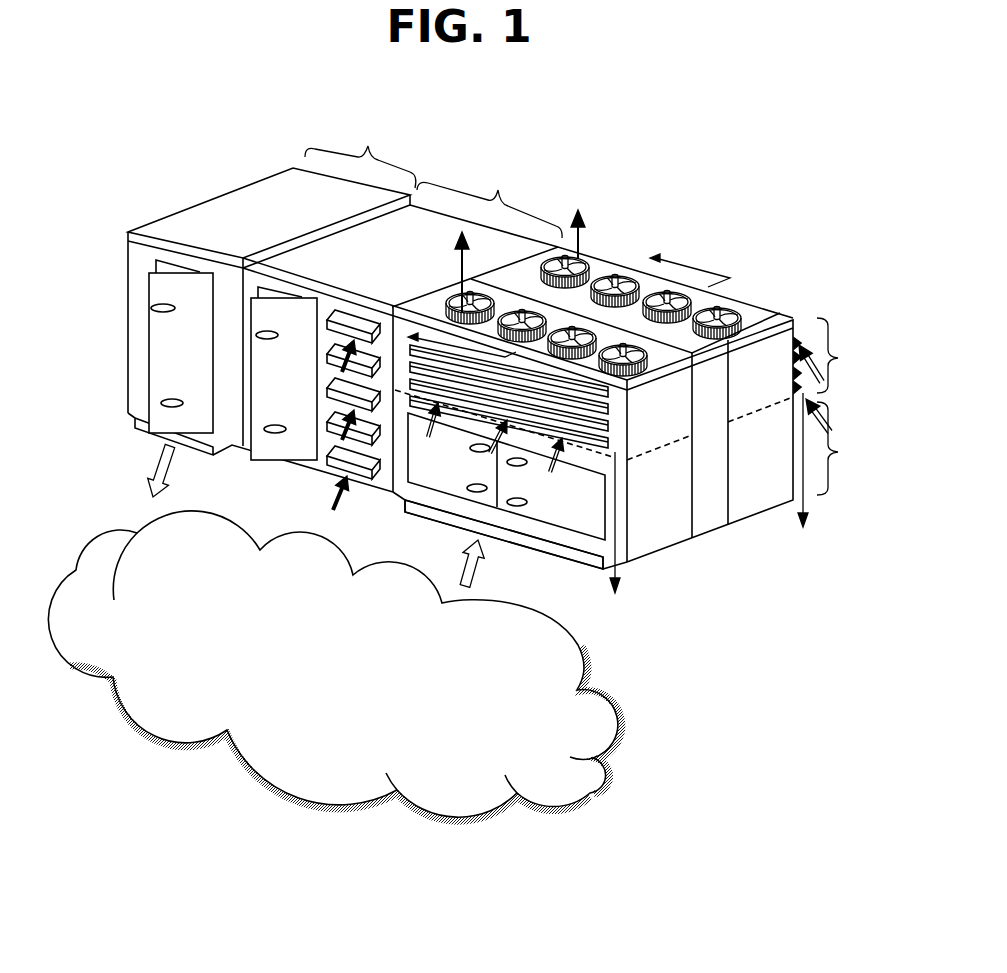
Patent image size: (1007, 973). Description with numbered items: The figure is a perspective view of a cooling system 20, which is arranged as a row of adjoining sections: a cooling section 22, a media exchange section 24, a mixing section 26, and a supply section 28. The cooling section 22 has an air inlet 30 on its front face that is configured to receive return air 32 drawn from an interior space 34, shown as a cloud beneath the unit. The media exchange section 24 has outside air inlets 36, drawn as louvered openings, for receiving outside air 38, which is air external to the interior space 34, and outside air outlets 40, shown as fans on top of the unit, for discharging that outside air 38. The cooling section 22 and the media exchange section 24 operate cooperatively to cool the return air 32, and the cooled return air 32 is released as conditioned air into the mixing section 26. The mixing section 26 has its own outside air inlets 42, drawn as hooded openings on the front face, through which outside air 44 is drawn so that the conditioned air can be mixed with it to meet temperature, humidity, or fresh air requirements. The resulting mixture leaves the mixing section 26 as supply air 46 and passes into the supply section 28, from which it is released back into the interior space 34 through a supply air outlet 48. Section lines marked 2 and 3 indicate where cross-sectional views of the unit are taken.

The cooling system 20 is at (689, 98).
The cooling section 22 is at (840, 453).
The media exchange section 24 is at (838, 358).
The mixing section 26 is at (498, 190).
The supply section 28 is at (368, 146).
The air inlet 30 is at (560, 553).
The return air 32 is at (488, 548).
The interior space 34 is at (600, 787).
The outside air inlets 36 is at (796, 333).
The outside air 38 is at (456, 273).
The outside air outlets 40 is at (733, 302).
The outside air inlets 42 is at (349, 326).
The outside air 44 is at (334, 351).
The supply air 46 is at (155, 465).
The supply air outlet 48 is at (207, 442).
The section line 2- 2 is at (707, 508).
The section line 3- 3 is at (563, 300).